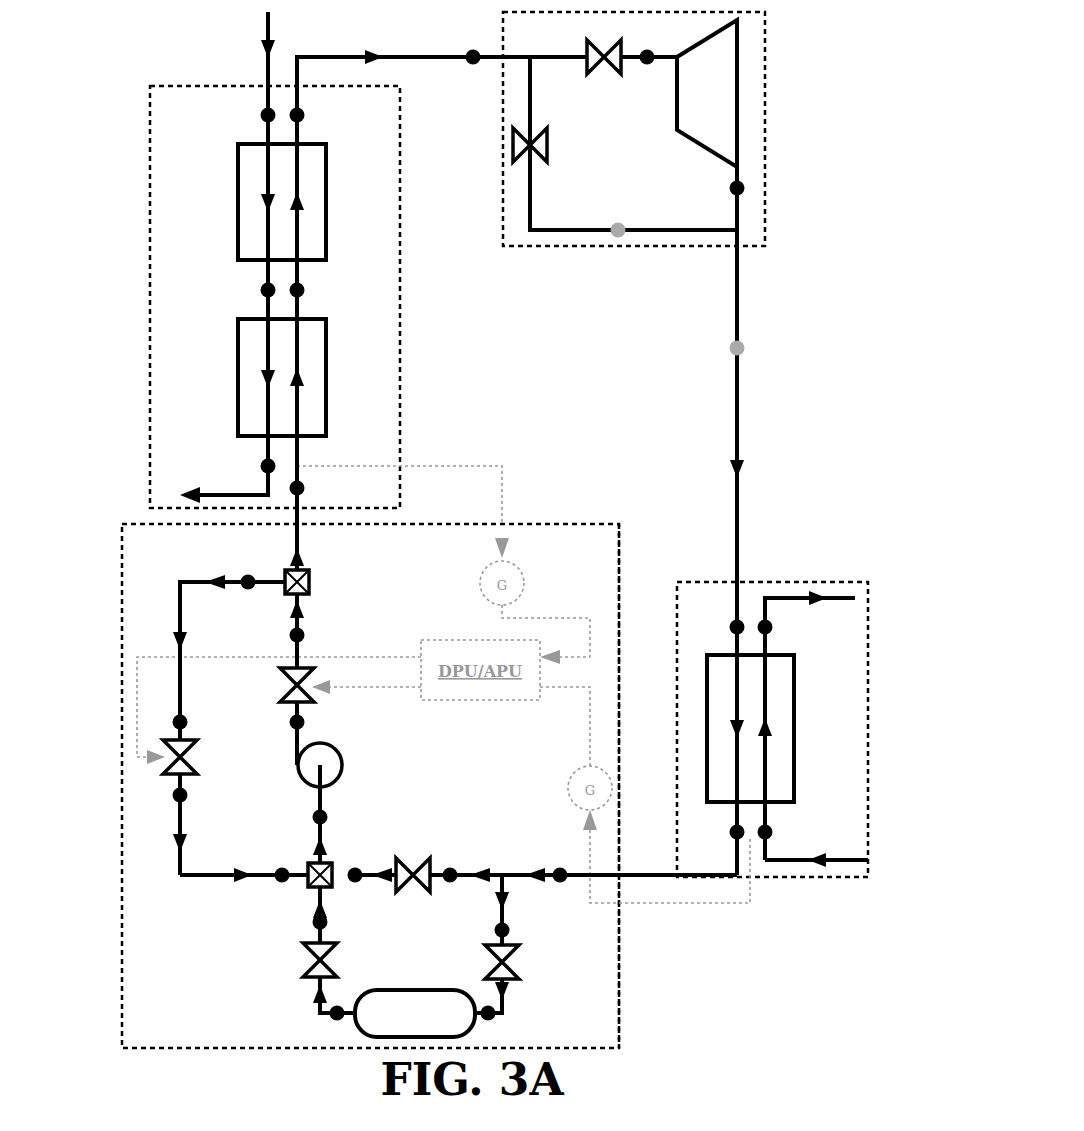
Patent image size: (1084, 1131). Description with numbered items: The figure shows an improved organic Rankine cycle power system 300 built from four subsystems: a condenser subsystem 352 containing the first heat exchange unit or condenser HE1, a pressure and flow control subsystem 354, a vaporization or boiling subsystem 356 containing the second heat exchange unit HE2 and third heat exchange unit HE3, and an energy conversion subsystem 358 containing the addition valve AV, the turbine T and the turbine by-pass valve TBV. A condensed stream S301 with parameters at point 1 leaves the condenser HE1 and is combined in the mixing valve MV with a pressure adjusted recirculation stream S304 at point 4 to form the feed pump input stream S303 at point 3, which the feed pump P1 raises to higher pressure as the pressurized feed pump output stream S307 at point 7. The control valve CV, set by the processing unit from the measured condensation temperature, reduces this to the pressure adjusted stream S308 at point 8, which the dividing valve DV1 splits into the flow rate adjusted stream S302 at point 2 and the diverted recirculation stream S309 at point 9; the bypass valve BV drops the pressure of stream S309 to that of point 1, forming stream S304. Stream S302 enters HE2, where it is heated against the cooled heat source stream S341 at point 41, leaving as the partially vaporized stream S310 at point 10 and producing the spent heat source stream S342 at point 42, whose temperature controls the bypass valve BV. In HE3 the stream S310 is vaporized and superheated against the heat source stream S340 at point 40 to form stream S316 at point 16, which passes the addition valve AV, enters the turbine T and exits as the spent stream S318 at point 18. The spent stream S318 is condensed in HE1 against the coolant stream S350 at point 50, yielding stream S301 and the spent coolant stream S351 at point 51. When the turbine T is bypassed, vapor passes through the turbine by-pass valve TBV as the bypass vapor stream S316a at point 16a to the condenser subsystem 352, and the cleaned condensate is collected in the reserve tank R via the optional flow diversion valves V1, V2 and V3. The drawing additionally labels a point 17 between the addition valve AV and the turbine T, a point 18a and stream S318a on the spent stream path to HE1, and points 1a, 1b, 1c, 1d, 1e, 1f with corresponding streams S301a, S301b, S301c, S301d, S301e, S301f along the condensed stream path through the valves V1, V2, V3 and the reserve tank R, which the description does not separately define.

The improved ORC power system 300 is at (778, 407).
The condenser subsystem 352 is at (668, 727).
The pressure and flow control subsystem 354 is at (632, 829).
The vaporization or boiling subsystem 356 is at (412, 276).
The energy conversion subsystem 358 is at (627, 262).
The condensed stream S301 is at (698, 878).
The working fluid stream to V2 S301a is at (507, 913).
The working fluid stream to V1 S301b is at (488, 880).
The working fluid stream to MV S301c is at (387, 868).
The working fluid stream to reservoir S301d is at (502, 1013).
The working fluid stream from reservoir S301e is at (318, 1010).
The working fluid stream to MV from V3 S301f is at (316, 930).
The feed pump input stream S303 is at (316, 799).
The pressure adjusted recirculation stream S304 is at (210, 878).
The pressurized feed pump output stream S307 is at (300, 742).
The pressure adjusted stream S308 is at (303, 618).
The diverted or recirculation stream S309 is at (232, 580).
The flow rate adjusted stream S302 is at (335, 389).
The heated or partially vaporized stream S310 is at (335, 237).
The vaporized or vaporized and superheated stream S316 is at (412, 55).
The bypass vapor stream S316a is at (560, 231).
The spent stream S318 is at (730, 204).
The turbine exhaust stream to HE1 S318a is at (733, 453).
The heat source stream S340 is at (358, 162).
The cooled heat source stream S341 is at (358, 243).
The spent heat source stream S342 is at (358, 418).
The coolant stream S350 is at (795, 862).
The spent coolant stream S351 is at (780, 596).
The first heat exchange unit or condenser HE1 is at (784, 728).
The second heat exchange unit HE2 is at (258, 377).
The third heat exchange unit HE3 is at (258, 202).
The turbine T is at (707, 93).
The addition valve AV is at (604, 70).
The turbine by-pass valve TBV is at (558, 145).
The dividing valve DV1 is at (318, 590).
The control valve CV is at (281, 685).
The bypass valve BV is at (200, 757).
The mixing valve MV is at (306, 883).
The feed pump P1 is at (338, 765).
The first flow diversion valve V1 is at (413, 888).
The second flow diversion valve V2 is at (517, 962).
The third flow diversion valve V3 is at (334, 960).
The reserve tank R is at (415, 1013).
The point 1 is at (649, 852).
The node 1a is at (515, 932).
The node 1b is at (451, 864).
The node 1c is at (356, 864).
The node 1d is at (488, 1029).
The node 1e is at (338, 1029).
The node 1f is at (332, 924).
The point 2 is at (308, 488).
The point 3 is at (330, 817).
The point 4 is at (231, 834).
The point 7 is at (287, 722).
The point 8 is at (308, 635).
The point 9 is at (214, 654).
The point 10 is at (312, 290).
The point 16 is at (387, 88).
The point 16a is at (620, 221).
The node 17 is at (648, 69).
The point 18 is at (719, 408).
The node 18a is at (714, 348).
The point 40 is at (253, 115).
The point 41 is at (253, 290).
The point 42 is at (252, 466).
The point 50 is at (782, 832).
The point 51 is at (782, 627).